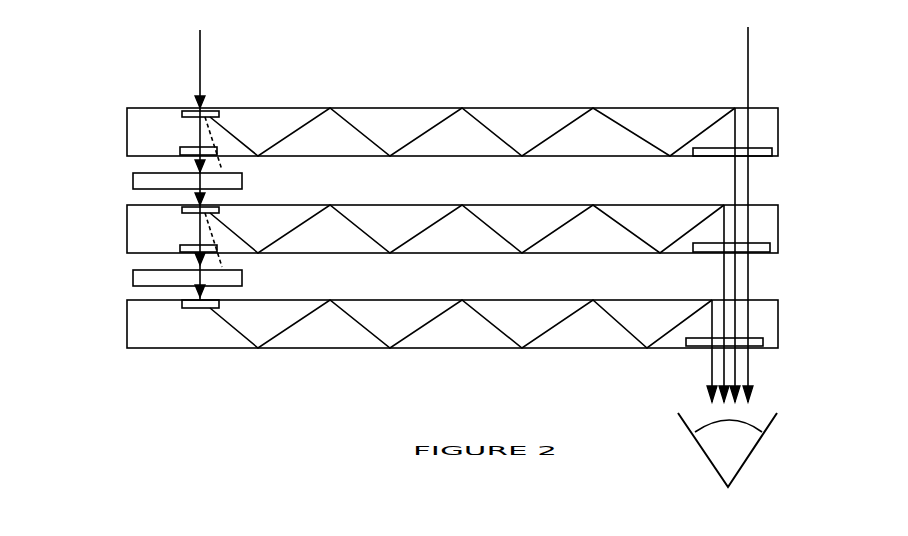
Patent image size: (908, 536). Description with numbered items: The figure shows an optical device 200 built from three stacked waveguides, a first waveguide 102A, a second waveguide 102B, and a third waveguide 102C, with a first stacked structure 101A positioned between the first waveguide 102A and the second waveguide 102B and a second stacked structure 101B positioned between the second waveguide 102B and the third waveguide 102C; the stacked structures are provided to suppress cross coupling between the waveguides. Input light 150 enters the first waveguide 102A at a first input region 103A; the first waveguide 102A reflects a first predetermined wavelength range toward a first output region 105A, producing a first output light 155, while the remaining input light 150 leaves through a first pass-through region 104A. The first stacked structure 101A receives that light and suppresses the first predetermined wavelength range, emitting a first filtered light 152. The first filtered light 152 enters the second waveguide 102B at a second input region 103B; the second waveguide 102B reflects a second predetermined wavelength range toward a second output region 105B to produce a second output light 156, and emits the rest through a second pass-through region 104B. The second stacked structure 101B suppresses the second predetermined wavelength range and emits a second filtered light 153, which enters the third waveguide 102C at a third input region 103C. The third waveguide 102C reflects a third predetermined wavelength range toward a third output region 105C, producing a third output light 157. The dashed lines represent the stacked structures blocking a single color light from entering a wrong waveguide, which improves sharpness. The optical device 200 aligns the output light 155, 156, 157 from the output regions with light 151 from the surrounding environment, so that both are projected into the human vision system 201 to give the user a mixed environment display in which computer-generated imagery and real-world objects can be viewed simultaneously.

The first waveguide 102A is at (127, 135).
The second waveguide 102B is at (127, 232).
The third waveguide 102C is at (127, 328).
The first input region 103A is at (186, 114).
The second input region 103B is at (186, 210).
The third input region 103C is at (186, 309).
The first pass-through region 104A is at (182, 153).
The second pass-through region 104B is at (182, 250).
The first stacked structure 101A is at (243, 181).
The second stacked structure 101B is at (243, 278).
The first output region 105A is at (775, 156).
The second output region 105B is at (775, 253).
The third output region 105C is at (768, 348).
The input light 150 is at (200, 53).
The light from the surrounding environment 151 is at (748, 52).
The first filtered light 152 is at (197, 198).
The second filtered light 153 is at (197, 292).
The first output light 155 is at (735, 175).
The second output light 156 is at (724, 275).
The third output light 157 is at (712, 367).
The optical device 200 is at (832, 292).
The human vision system 201 is at (752, 425).